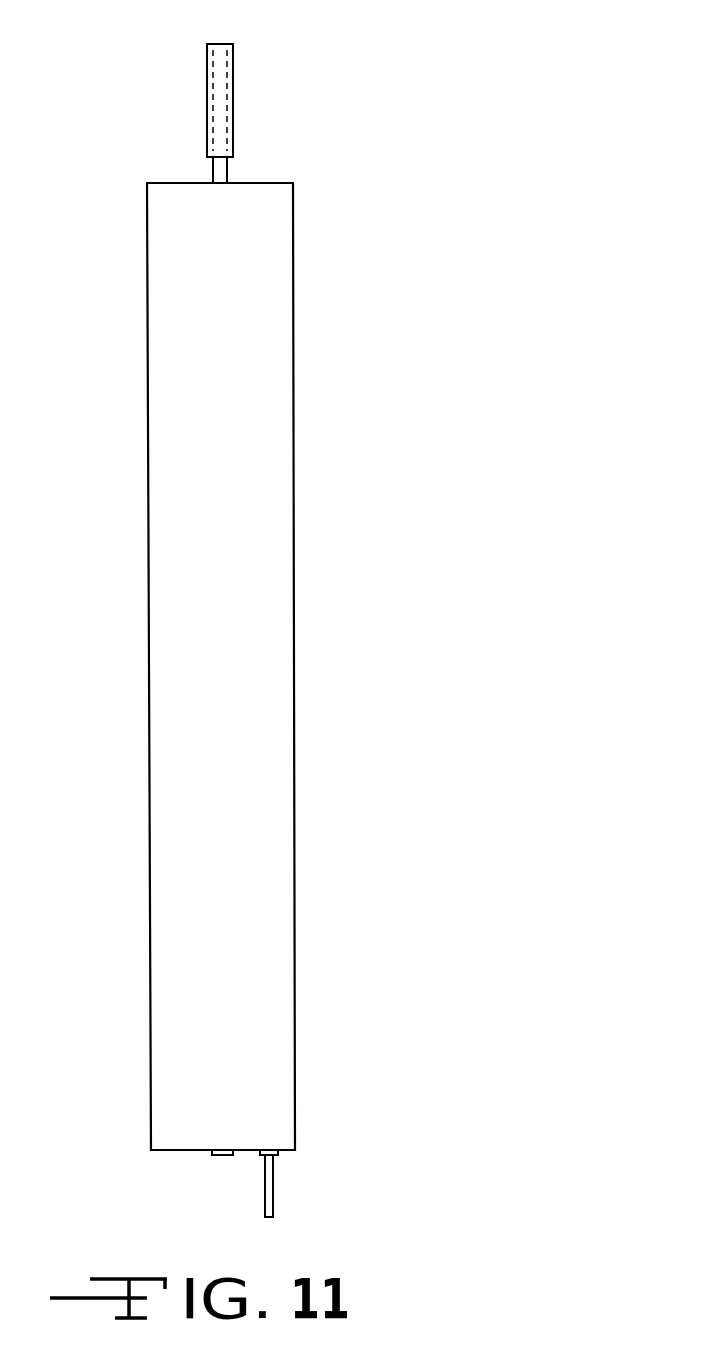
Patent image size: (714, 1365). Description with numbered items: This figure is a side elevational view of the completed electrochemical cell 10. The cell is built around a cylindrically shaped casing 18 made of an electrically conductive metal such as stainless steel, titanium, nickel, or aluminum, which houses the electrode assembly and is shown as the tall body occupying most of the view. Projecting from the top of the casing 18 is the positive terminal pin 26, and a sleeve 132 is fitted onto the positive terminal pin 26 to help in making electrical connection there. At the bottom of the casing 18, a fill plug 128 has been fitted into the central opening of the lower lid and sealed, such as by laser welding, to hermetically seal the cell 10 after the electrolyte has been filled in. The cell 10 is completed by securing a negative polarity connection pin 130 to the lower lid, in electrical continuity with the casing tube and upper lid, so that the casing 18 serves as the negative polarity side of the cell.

The electrochemical cell 10 is at (540, 120).
The casing 18 is at (392, 454).
The positive terminal pin 26 is at (227, 165).
The fill plug 128 is at (222, 1155).
The negative polarity connection pin 130 is at (272, 1178).
The sleeve 132 is at (233, 58).